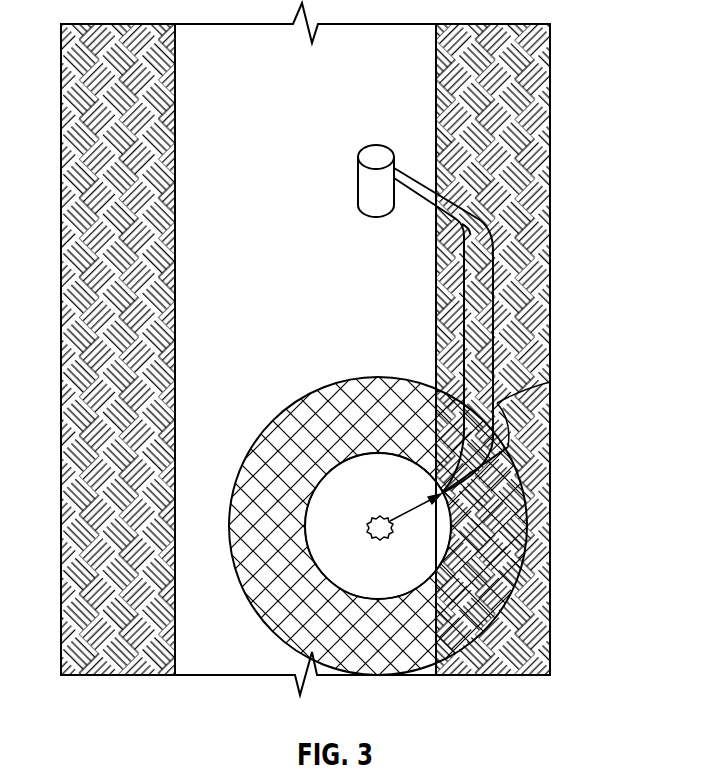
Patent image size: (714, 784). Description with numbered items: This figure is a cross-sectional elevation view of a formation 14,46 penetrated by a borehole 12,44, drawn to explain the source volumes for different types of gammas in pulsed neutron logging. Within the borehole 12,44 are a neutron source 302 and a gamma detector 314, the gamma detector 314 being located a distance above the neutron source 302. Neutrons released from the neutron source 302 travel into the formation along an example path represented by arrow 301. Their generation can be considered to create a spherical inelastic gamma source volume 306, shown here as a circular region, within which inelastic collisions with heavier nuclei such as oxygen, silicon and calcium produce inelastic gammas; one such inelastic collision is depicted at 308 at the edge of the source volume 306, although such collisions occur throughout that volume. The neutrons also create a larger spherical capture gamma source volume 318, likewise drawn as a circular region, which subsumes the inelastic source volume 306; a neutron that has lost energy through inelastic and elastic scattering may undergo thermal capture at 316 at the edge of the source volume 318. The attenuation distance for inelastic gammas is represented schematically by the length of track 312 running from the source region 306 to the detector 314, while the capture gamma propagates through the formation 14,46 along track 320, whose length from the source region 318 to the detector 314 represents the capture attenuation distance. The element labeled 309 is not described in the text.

The borehole 12 is at (272, 292).
The borehole 44 is at (305, 32).
The formation 14 is at (149, 193).
The formation 46 is at (529, 115).
The arrow 301 is at (400, 518).
The neutron source 302 is at (370, 518).
The inelastic gamma source volume 306 is at (378, 573).
The inelastic collision 308 is at (440, 493).
The penetration 309 is at (505, 432).
The track 312 is at (463, 323).
The gamma detector 314 is at (357, 181).
The capture collision 316 is at (497, 403).
The capture gamma source volume 318 is at (527, 517).
The track 320 is at (470, 232).